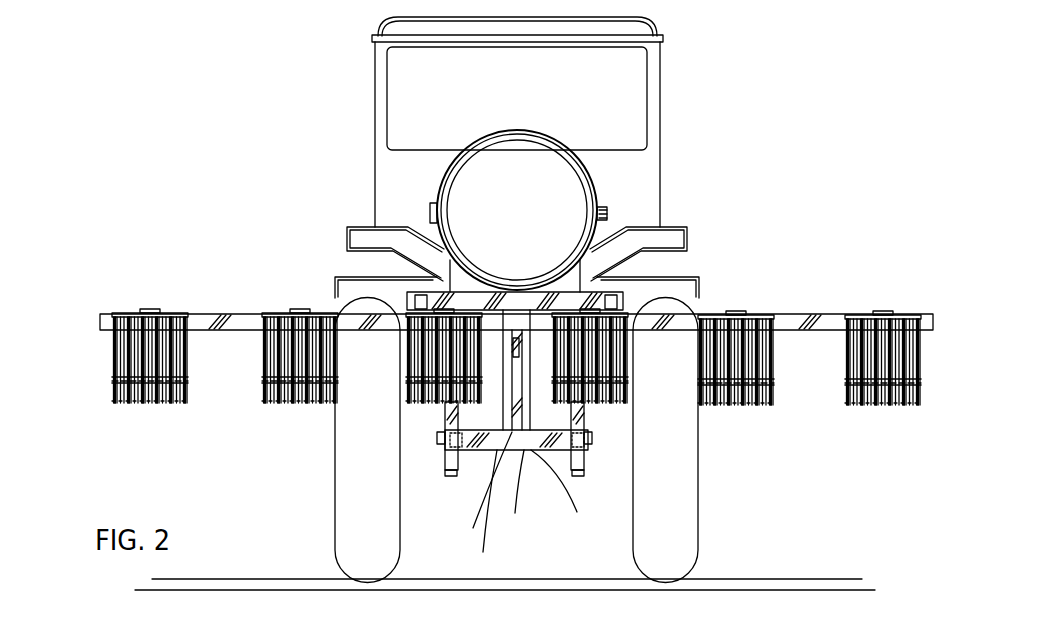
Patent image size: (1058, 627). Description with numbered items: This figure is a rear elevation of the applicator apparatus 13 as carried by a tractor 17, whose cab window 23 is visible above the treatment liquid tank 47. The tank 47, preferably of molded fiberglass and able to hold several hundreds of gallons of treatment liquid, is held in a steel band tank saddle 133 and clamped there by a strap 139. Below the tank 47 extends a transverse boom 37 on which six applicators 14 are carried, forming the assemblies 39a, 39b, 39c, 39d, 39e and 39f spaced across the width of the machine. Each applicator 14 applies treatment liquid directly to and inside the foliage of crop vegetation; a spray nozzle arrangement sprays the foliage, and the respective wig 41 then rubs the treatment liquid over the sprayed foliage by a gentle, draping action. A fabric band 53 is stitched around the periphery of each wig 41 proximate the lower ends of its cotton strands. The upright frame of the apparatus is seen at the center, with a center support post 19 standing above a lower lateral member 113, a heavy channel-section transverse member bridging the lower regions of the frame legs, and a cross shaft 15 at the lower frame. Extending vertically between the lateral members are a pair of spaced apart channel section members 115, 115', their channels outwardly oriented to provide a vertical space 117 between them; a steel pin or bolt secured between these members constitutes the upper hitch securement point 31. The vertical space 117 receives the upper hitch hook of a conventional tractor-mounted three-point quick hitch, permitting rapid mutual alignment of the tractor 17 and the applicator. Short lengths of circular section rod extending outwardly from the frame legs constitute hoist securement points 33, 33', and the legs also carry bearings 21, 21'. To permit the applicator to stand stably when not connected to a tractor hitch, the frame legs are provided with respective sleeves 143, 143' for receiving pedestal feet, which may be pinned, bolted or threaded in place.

The sweeper attachment 13 is at (815, 232).
The applicator 14 is at (503, 360).
The cross shaft 15 is at (519, 452).
The vehicle cab 17 is at (550, 154).
The center support post 19 is at (477, 370).
The bearing 21 is at (447, 469).
The bearing 21' is at (602, 452).
The cab window 23 is at (655, 118).
The upper hitch securement point 31 is at (522, 348).
The hoist securement point 33 is at (431, 487).
The hoist securement point 33' is at (598, 453).
The transverse boom 37 is at (815, 316).
The assembly 39a is at (892, 430).
The assembly 39b is at (750, 419).
The assembly 39c is at (640, 413).
The assembly 39d is at (395, 408).
The assembly 39e is at (260, 415).
The assembly 39f is at (119, 412).
The wig 41 is at (113, 392).
The tank 47 is at (573, 193).
The fabric band 53 is at (113, 377).
The lateral member 113 is at (532, 488).
The channel section member 115 is at (479, 491).
The channel section member 115' is at (571, 487).
The vertical space 117 is at (475, 511).
The tank saddle 133 is at (592, 232).
The strap 139 is at (585, 165).
The sleeve 143 is at (432, 521).
The sleeve 143' is at (599, 487).